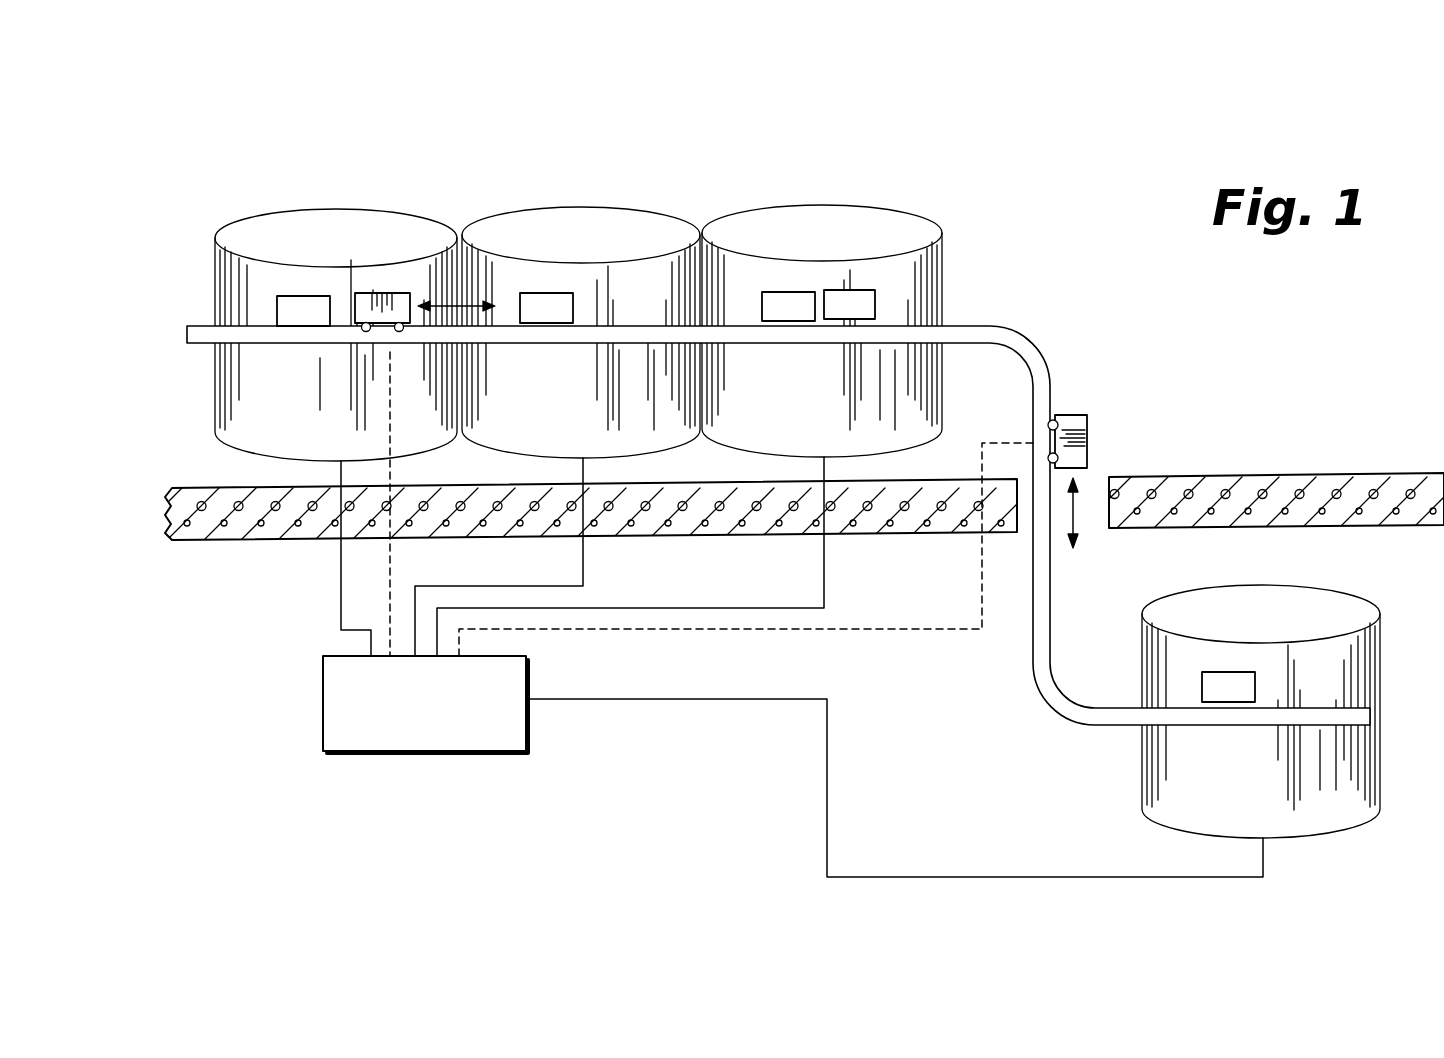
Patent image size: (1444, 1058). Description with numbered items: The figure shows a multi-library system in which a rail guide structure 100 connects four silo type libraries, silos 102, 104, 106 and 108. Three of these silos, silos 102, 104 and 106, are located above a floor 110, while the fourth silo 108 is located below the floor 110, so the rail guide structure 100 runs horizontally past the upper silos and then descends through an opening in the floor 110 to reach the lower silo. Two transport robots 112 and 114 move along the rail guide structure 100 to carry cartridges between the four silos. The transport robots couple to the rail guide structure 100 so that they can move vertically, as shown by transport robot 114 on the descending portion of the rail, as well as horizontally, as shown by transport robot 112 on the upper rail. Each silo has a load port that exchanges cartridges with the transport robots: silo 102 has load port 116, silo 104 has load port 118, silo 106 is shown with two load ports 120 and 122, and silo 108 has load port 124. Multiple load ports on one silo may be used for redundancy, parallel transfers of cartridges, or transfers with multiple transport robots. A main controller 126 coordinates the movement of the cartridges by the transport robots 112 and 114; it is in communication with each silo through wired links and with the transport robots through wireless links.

The rail guide structure 100 is at (194, 328).
The silo 102 is at (278, 222).
The silo 104 is at (523, 220).
The silo 106 is at (770, 220).
The silo 108 is at (1168, 605).
The floor 110 is at (232, 540).
The transport robot 112 is at (400, 305).
The transport robot 114 is at (1087, 435).
The load port 116 is at (296, 312).
The load port 118 is at (547, 310).
The load port 120 is at (792, 310).
The load port 122 is at (845, 305).
The load port 124 is at (1233, 703).
The main controller 126 is at (323, 712).